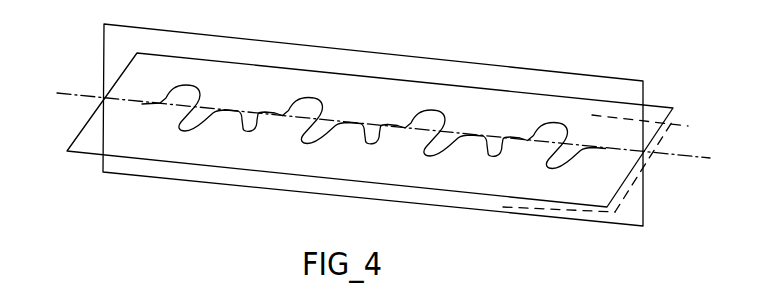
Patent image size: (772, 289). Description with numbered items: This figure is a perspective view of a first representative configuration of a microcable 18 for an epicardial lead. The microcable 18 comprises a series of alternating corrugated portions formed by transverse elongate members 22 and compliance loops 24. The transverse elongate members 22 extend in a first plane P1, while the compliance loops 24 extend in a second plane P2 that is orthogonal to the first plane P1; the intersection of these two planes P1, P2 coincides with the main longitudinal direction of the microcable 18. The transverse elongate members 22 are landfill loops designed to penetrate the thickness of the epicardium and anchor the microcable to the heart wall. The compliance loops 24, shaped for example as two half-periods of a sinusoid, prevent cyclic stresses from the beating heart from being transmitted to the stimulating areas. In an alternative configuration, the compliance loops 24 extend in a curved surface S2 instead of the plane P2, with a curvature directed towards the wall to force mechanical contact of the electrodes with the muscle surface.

The microcable 18 is at (140, 105).
The compliance loop 24 is at (313, 121).
The transverse elongate member 22 is at (378, 141).
The first plane P1 is at (645, 92).
The second plane P2 is at (665, 112).
The curved surface S2 is at (677, 127).